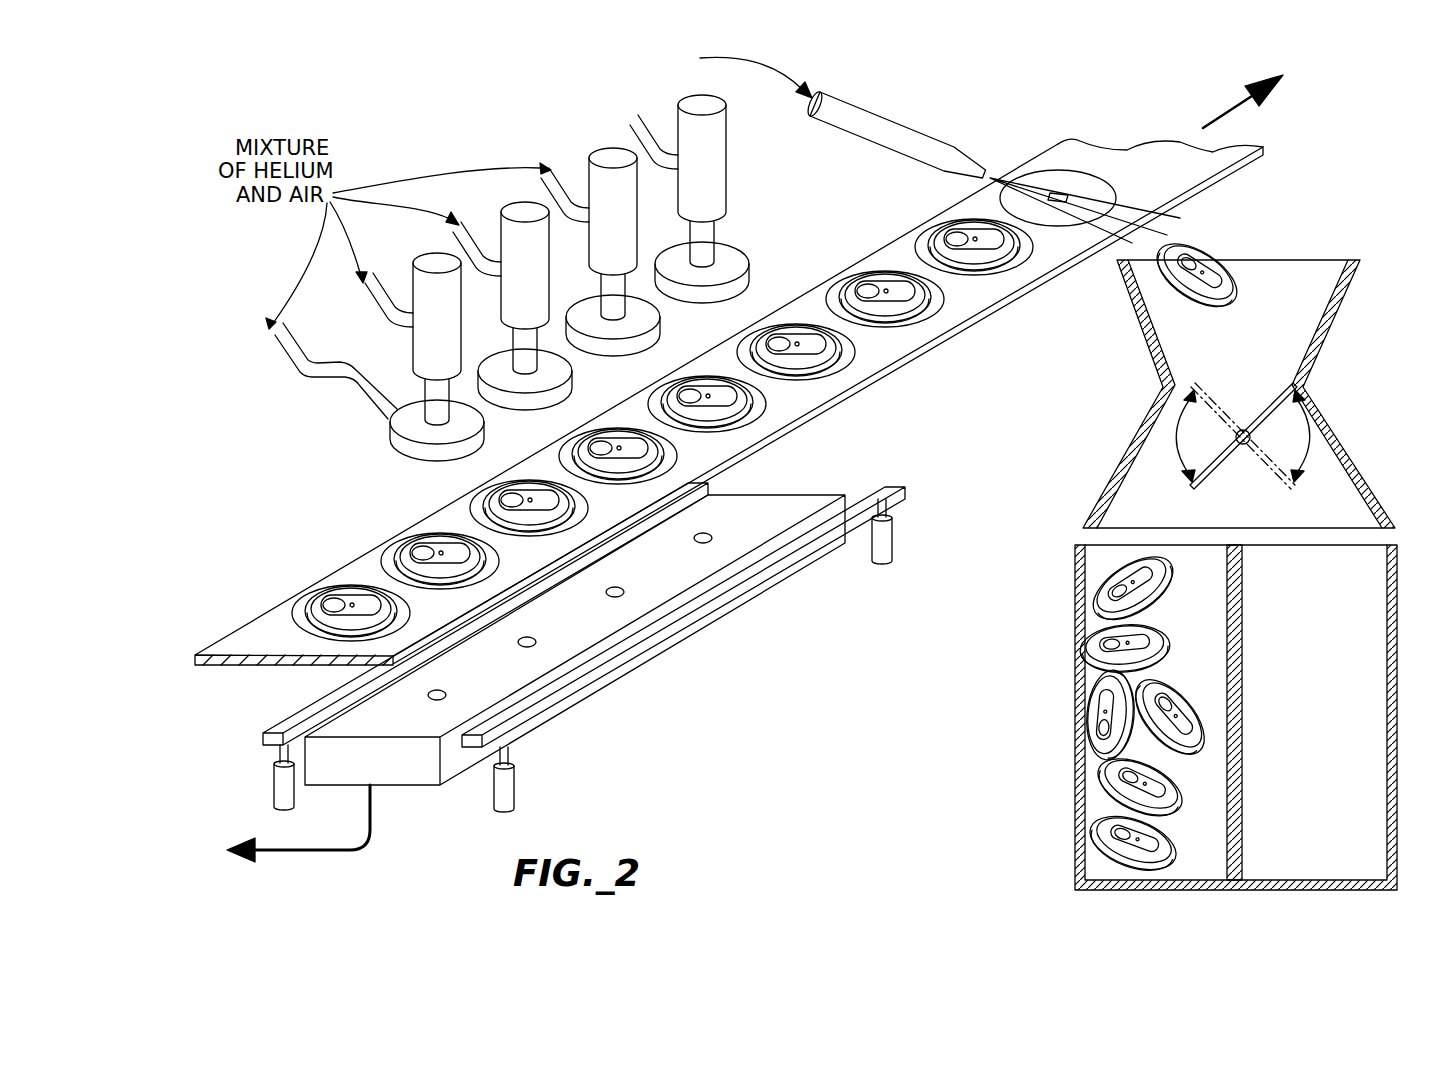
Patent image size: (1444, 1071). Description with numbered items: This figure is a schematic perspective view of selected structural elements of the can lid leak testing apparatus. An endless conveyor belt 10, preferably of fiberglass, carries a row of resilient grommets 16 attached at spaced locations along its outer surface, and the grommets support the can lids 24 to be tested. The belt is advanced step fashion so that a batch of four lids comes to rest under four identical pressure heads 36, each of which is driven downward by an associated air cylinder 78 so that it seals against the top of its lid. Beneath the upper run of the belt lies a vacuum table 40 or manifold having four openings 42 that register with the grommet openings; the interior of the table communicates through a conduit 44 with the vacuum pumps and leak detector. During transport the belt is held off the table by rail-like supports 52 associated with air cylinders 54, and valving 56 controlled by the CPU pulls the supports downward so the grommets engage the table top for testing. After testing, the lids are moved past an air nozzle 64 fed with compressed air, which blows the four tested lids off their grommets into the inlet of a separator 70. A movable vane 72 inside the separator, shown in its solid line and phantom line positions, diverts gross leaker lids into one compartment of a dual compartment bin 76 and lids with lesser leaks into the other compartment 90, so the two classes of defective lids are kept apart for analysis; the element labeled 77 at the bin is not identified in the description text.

The conveyor belt 10 is at (830, 385).
The grommets 16 is at (1082, 187).
The can lids 24 is at (947, 227).
The pressure heads 36 is at (470, 438).
The vacuum table 40 is at (382, 772).
The openings 42 is at (445, 693).
The conduit 44 is at (343, 852).
The rail-like supports 52 is at (305, 717).
The air cylinders 54 is at (280, 790).
The valving 56 is at (607, 672).
The air nozzle 64 is at (900, 120).
The separator 70 is at (1323, 372).
The vane 72 is at (1332, 482).
The dual compartment bin 76 is at (1398, 720).
The partition 77 is at (1108, 565).
The air cylinders 78 is at (417, 293).
The compartment 90 is at (1362, 603).